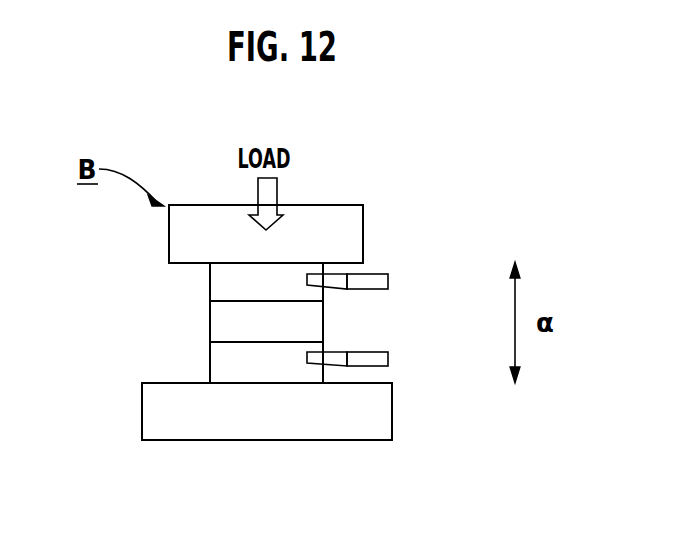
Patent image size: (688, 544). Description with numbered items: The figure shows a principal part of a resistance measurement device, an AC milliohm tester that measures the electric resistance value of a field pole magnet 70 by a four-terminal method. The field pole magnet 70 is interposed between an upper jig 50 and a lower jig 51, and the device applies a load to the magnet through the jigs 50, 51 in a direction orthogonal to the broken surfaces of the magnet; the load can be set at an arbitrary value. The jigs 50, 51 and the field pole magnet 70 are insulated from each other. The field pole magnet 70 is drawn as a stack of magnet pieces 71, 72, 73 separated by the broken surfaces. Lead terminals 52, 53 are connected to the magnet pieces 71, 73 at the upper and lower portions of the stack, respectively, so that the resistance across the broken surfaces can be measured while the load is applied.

The jig 50 is at (353, 205).
The jig 51 is at (372, 440).
The lead terminal 52 is at (390, 278).
The lead terminal 53 is at (390, 356).
The field pole magnet 70 is at (181, 323).
The first layer 71 is at (210, 284).
The second layer 72 is at (210, 323).
The third layer 73 is at (154, 362).